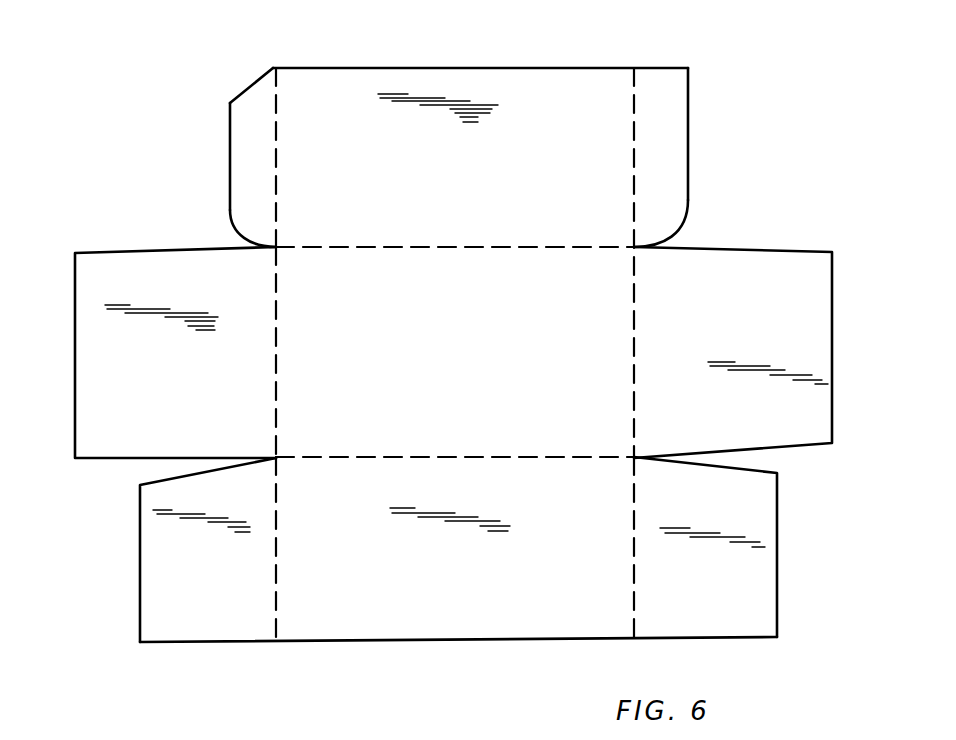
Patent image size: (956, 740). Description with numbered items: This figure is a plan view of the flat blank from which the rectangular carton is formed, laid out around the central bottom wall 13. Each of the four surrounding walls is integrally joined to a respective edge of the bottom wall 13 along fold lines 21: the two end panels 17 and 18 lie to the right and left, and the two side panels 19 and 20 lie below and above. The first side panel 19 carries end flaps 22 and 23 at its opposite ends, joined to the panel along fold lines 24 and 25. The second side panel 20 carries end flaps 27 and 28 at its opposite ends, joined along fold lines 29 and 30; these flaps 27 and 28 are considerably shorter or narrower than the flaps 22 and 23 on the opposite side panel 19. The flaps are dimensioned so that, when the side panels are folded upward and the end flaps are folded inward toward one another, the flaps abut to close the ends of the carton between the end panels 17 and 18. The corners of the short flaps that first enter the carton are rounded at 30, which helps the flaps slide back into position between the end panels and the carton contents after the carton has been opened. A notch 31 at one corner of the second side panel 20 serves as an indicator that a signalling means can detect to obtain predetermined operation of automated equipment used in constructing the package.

The bottom wall 13 is at (475, 369).
The end panel 17 is at (823, 335).
The end panel 18 is at (90, 375).
The first side panel 19 is at (497, 622).
The second side panel 20 is at (475, 77).
The fold lines 21 is at (483, 247).
The end flap 22 is at (140, 578).
The end flap 23 is at (777, 567).
The fold line 24 is at (278, 545).
The fold line 25 is at (634, 527).
The end flap 27 is at (229, 170).
The end flap 28 is at (689, 150).
The fold line 29 is at (277, 125).
The rounded corner 30 is at (246, 233).
The notch 31 is at (258, 82).